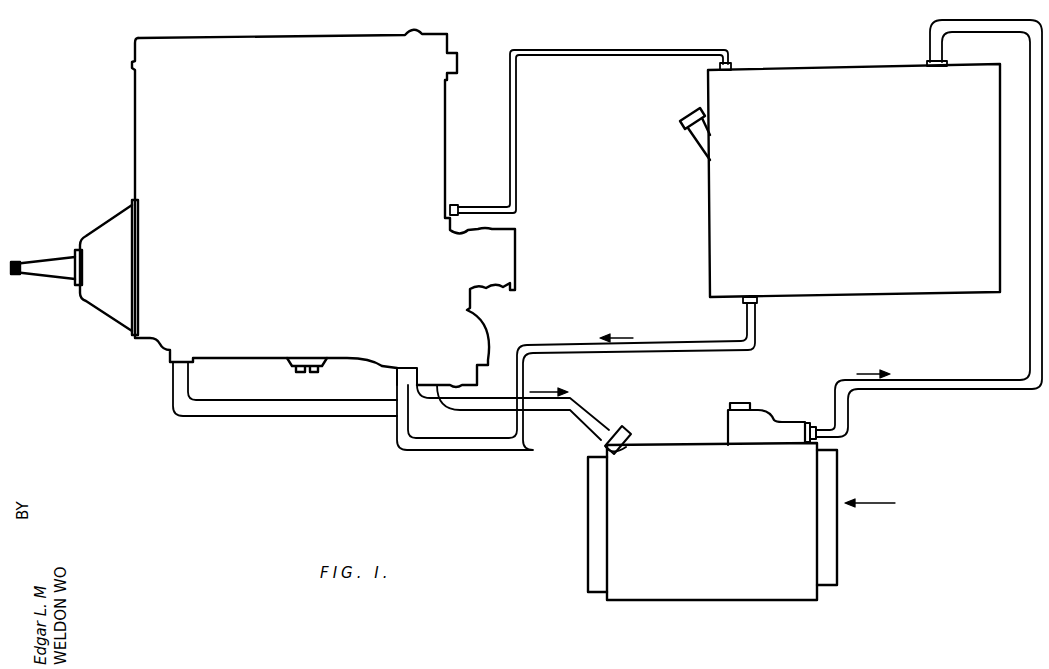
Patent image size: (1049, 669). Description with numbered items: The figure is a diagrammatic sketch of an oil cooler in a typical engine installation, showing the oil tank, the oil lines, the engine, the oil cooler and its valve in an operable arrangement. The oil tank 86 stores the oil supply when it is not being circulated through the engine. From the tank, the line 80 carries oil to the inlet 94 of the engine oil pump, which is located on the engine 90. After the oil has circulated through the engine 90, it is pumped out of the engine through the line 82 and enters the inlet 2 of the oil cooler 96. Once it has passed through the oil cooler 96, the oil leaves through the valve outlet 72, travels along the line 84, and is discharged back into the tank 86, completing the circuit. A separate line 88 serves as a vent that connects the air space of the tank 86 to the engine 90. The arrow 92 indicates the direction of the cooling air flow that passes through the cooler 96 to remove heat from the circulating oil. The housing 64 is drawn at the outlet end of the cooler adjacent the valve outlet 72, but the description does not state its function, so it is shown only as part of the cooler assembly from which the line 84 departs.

The inlet of the oil cooler 2 is at (623, 436).
The thermostat housing 64 is at (729, 428).
The valve outlet 72 is at (822, 437).
The oil supply line 80 is at (581, 345).
The oil outlet line 82 is at (538, 406).
The oil return line 84 is at (957, 391).
The oil tank 86 is at (714, 218).
The vent line 88 is at (617, 53).
The engine 90 is at (161, 353).
The cooling air flow arrow 92 is at (873, 506).
The inlet of the engine oil pump 94 is at (396, 374).
The oil cooler 96 is at (706, 600).